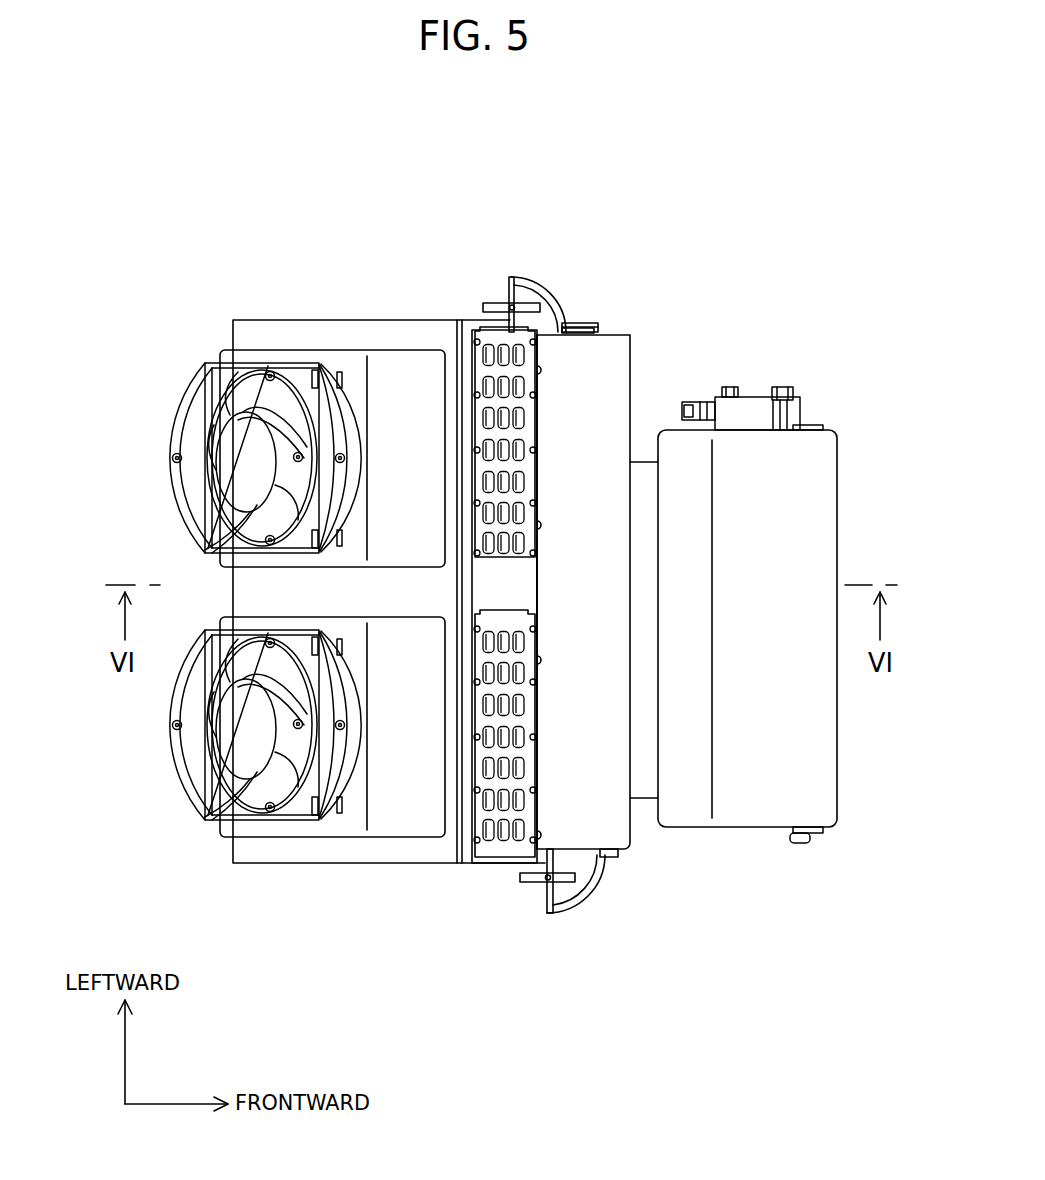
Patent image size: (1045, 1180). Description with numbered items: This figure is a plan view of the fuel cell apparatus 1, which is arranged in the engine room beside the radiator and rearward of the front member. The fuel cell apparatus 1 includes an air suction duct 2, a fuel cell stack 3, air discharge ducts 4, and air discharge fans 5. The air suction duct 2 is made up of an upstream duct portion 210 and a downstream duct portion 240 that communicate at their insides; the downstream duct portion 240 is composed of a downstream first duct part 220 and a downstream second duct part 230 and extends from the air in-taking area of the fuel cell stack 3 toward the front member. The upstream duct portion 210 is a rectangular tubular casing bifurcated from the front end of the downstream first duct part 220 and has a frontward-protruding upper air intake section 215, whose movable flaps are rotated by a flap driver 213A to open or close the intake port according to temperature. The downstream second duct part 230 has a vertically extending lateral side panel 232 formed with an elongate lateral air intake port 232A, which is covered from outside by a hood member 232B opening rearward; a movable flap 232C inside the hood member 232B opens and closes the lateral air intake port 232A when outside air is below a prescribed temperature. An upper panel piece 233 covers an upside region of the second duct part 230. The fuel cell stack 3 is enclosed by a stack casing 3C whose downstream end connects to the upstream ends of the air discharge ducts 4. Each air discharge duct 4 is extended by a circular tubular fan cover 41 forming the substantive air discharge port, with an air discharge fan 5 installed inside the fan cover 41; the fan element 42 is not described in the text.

The fuel cell apparatus 1 is at (692, 148).
The air suction duct 2 is at (817, 315).
The fuel cell stack 3 is at (488, 872).
The stack casing 3C is at (542, 423).
The air discharge duct 4 is at (396, 398).
The air discharge fan 5 is at (229, 591).
The fan cover 41 is at (316, 372).
The fan blade 42 is at (183, 497).
The upstream duct portion 210 is at (822, 416).
The flap driver 213A is at (750, 406).
The upper air intake section 215 is at (826, 838).
The downstream first duct part 220 is at (645, 804).
The downstream second duct part 230 is at (618, 860).
The lateral side panel 232 is at (590, 323).
The lateral air intake port 232A is at (556, 310).
The hood member 232B is at (558, 300).
The movable flap 232C is at (500, 302).
The upper panel piece 233 is at (590, 370).
The downstream duct portion 240 is at (660, 687).